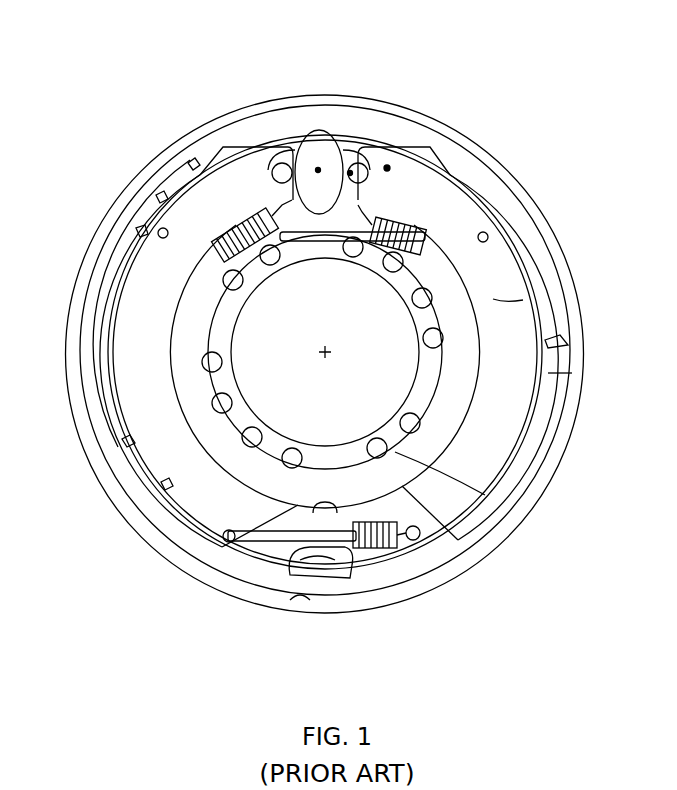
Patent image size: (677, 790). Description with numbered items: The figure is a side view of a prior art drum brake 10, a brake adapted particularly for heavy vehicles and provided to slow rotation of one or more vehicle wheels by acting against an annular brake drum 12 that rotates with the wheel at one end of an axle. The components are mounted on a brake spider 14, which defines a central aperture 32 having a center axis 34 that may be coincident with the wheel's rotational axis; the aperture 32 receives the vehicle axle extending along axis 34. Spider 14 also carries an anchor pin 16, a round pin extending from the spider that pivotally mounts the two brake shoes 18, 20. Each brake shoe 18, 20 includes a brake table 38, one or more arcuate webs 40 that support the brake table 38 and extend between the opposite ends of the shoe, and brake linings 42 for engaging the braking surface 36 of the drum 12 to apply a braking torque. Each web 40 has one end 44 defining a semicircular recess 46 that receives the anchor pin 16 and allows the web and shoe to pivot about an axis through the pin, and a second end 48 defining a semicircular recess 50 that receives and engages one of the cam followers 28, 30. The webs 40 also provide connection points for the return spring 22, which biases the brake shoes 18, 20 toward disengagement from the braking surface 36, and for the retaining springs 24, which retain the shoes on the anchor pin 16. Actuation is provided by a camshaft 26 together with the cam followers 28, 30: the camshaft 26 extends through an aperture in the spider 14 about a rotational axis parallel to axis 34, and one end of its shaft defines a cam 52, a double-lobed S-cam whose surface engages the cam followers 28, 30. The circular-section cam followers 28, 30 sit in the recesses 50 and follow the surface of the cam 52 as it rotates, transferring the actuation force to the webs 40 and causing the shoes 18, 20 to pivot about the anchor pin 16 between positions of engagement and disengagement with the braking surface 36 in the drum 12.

The drum brake 10 is at (245, 133).
The brake drum 12 is at (467, 562).
The brake spider 14 is at (438, 422).
The anchor pin 16 is at (290, 600).
The brake shoe 18 is at (140, 393).
The brake shoe 20 is at (512, 395).
The return spring 22 is at (419, 250).
The retaining spring 24 is at (463, 580).
The camshaft 26 is at (300, 140).
The cam follower 28 is at (278, 257).
The cam follower 30 is at (340, 256).
The central aperture 32 is at (485, 495).
The center axis 34 is at (330, 357).
The braking surface 36 is at (425, 600).
The brake table 38 is at (572, 362).
The web 40 is at (523, 300).
The brake lining 42 is at (578, 391).
The web end 44 is at (368, 566).
The semicircular recess 46 is at (335, 598).
The second web end 48 is at (387, 168).
The semicircular recess 50 is at (350, 172).
The cam 52 is at (318, 168).